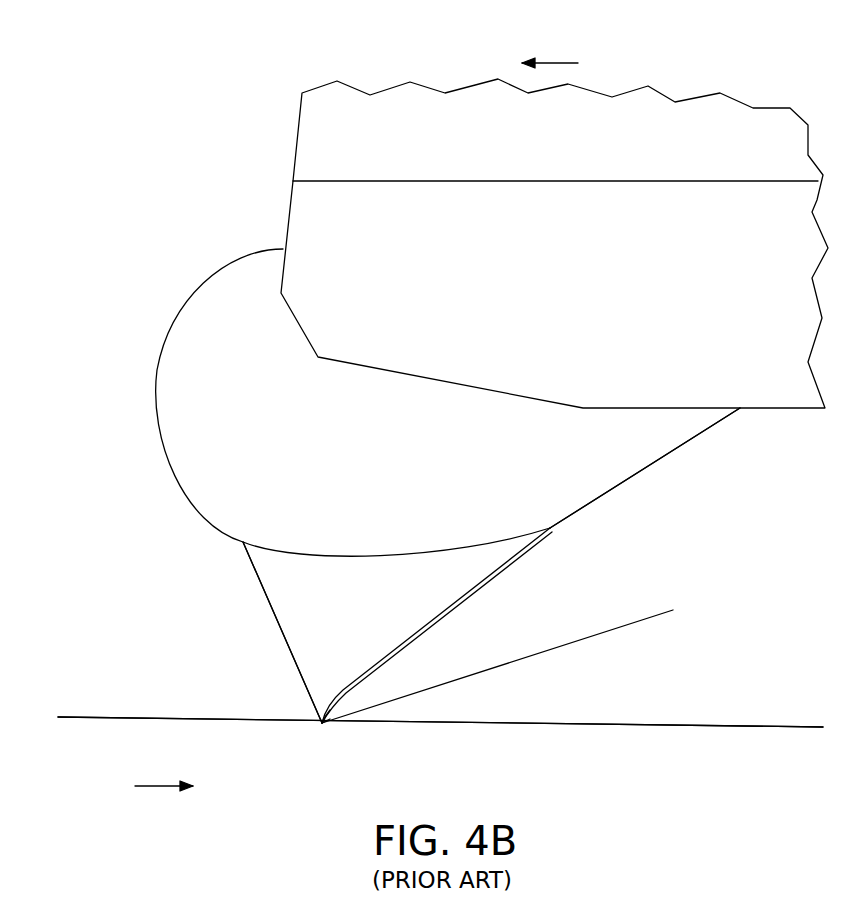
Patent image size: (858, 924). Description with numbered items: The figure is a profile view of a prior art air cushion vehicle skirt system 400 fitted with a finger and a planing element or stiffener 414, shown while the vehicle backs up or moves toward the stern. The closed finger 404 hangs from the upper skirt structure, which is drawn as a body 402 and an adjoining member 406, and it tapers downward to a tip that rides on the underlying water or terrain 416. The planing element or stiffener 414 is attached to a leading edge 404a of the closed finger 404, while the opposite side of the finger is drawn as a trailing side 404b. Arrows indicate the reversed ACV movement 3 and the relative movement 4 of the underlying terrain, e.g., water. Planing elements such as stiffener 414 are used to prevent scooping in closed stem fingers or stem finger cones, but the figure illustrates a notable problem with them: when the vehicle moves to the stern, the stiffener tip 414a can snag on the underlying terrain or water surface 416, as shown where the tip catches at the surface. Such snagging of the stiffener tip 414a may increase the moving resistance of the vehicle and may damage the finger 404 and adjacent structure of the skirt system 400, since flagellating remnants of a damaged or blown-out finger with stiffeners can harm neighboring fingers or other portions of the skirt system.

The ACV skirt system 400 is at (637, 793).
The cutting head body 402 is at (170, 325).
The closed finger 404 is at (278, 580).
The leading edge 404a is at (552, 533).
The second face of cutting tip 404b is at (283, 624).
The tool holder / shank 406 is at (287, 212).
The planing element or stiffener 414 is at (459, 604).
The stiffener tip 414a is at (322, 726).
The underlying water or terrain 416 is at (130, 717).
The ACV movement 3 is at (545, 63).
The terrain movement 4 is at (158, 786).